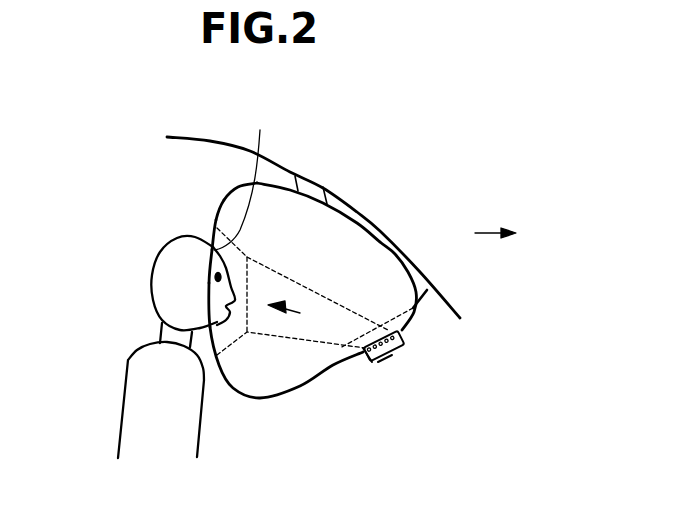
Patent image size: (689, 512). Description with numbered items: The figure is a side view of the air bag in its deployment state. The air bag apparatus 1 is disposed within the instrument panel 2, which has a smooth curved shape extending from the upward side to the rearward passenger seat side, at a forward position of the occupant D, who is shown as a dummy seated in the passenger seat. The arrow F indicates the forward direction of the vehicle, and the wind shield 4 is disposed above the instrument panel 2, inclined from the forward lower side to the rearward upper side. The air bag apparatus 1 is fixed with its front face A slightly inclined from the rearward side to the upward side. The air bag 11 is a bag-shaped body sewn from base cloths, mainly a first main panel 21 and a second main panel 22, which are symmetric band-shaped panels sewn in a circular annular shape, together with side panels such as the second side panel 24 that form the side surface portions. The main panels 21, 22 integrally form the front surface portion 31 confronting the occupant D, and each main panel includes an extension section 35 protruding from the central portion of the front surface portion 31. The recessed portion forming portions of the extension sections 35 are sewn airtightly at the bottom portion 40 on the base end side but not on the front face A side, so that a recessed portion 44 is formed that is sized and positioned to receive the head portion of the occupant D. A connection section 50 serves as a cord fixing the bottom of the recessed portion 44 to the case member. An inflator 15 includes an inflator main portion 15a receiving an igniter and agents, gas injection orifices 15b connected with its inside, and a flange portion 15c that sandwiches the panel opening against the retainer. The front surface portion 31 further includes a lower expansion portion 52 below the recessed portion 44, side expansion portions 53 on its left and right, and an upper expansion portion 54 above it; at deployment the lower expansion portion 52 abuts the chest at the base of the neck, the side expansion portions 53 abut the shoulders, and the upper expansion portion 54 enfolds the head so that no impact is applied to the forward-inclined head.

The air bag apparatus 1 is at (226, 172).
The instrument panel 2 is at (427, 290).
The wind shield 4 is at (282, 165).
The air bag 11 is at (300, 181).
The first main panel 21 is at (377, 172).
The second main panel 22 is at (327, 196).
The second side panel 24 is at (342, 216).
The inflator 15 is at (405, 352).
The inflator main portion 15a is at (388, 363).
The gas injection orifices 15b is at (374, 331).
The flange portion 15c is at (367, 363).
The front surface portion 31 is at (218, 217).
The extension section 35 is at (313, 283).
The bottom portion 40 is at (248, 280).
The recessed portion 44 is at (213, 233).
The connection section 50 is at (280, 268).
The lower expansion portion 52 is at (228, 398).
The side expansion portion 53 is at (208, 265).
The upper expansion portion 54 is at (227, 200).
The front face A is at (295, 316).
The occupant D is at (130, 373).
The forward direction F is at (365, 179).